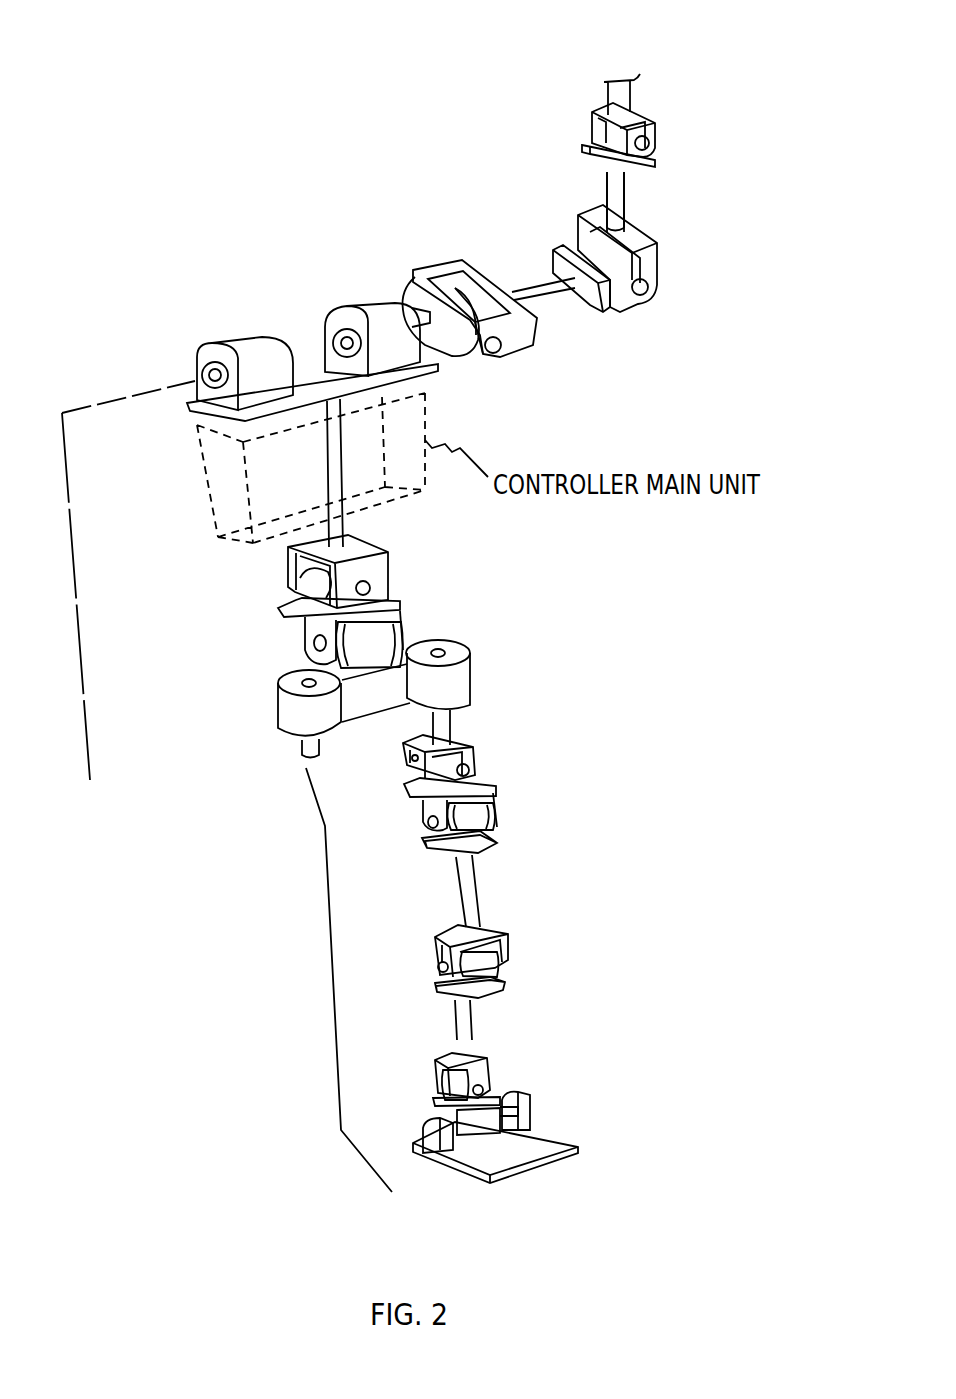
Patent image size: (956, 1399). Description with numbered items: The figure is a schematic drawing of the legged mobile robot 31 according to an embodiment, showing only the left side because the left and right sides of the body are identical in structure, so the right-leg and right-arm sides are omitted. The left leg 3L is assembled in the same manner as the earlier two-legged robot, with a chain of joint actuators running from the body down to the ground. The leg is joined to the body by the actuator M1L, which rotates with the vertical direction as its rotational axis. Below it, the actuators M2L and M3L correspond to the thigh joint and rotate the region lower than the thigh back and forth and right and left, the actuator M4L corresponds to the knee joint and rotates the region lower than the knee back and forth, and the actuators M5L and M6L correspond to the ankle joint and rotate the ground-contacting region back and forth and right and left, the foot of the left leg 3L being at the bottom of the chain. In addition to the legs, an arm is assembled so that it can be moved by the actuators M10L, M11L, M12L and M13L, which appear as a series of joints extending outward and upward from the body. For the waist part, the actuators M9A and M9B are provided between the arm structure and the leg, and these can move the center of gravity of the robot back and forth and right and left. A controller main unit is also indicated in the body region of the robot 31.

The legged mobile robot 31 is at (127, 156).
The actuator M13L is at (570, 94).
The actuator M12L is at (636, 330).
The actuator M11L is at (477, 378).
The actuator M10L is at (350, 290).
The actuator M9B is at (393, 583).
The actuator M9A is at (413, 630).
The actuator M1L is at (478, 690).
The actuator M2L is at (477, 768).
The actuator M3L is at (512, 803).
The actuator M4L is at (522, 942).
The actuator M5L is at (500, 1075).
The actuator M6L is at (540, 1115).
The left leg 3L is at (555, 1185).